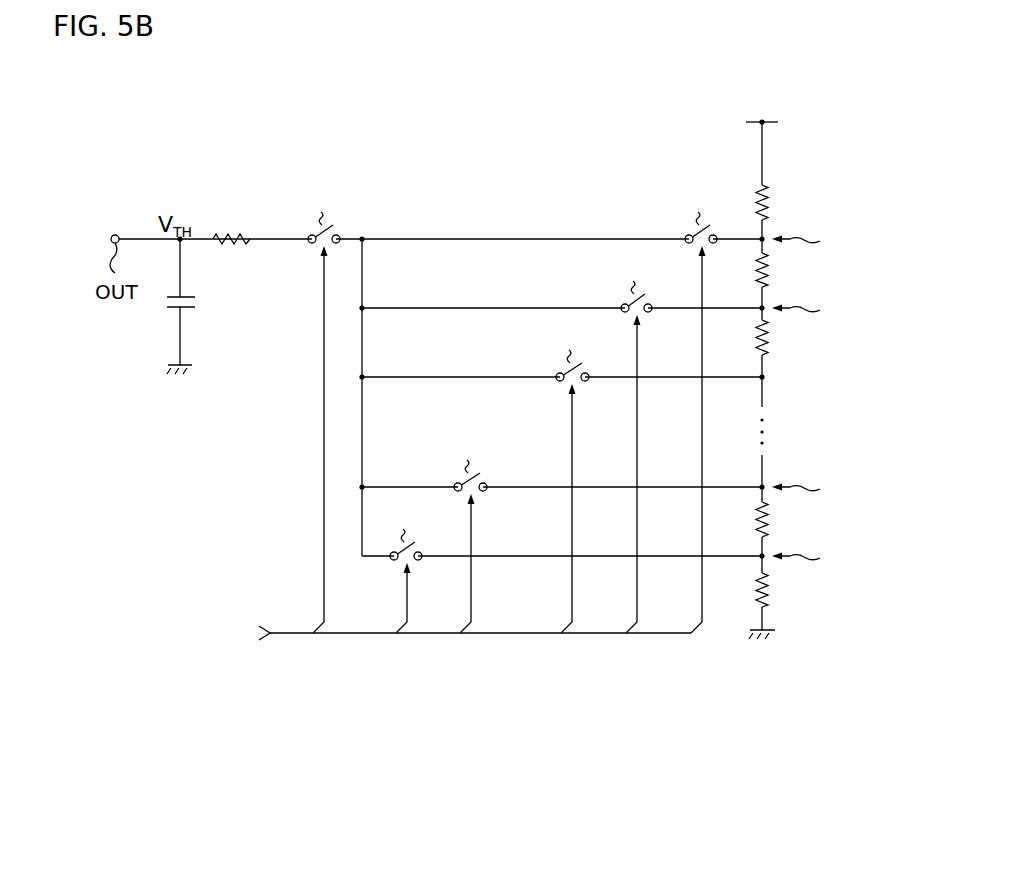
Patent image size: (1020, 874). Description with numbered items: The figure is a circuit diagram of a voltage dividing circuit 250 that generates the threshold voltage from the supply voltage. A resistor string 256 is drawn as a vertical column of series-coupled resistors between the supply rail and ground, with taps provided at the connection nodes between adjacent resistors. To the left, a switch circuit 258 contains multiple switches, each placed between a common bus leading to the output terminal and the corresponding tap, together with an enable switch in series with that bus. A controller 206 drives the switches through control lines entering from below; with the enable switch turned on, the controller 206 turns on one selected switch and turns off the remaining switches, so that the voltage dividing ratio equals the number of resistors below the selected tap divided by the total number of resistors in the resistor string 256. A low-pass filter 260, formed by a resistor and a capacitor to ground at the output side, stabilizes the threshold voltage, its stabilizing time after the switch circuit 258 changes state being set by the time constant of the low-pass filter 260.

The threshold voltage generation circuit 250 is at (724, 70).
The resistor string 256 is at (797, 170).
The switch circuit 258 is at (730, 661).
The low-pass filter 260 is at (262, 379).
The controller 206 is at (451, 632).